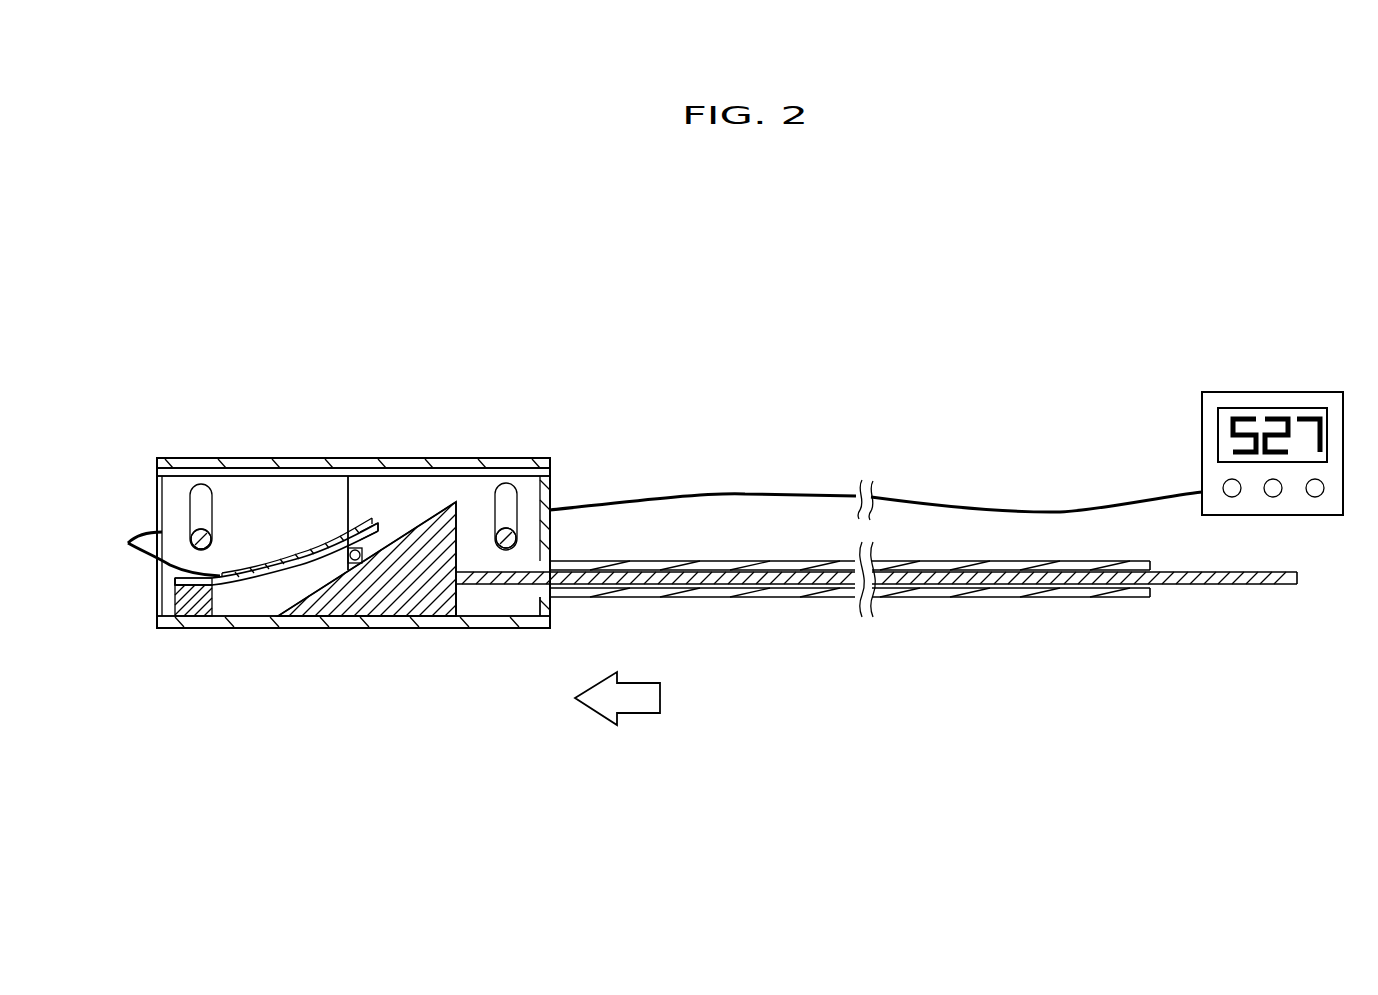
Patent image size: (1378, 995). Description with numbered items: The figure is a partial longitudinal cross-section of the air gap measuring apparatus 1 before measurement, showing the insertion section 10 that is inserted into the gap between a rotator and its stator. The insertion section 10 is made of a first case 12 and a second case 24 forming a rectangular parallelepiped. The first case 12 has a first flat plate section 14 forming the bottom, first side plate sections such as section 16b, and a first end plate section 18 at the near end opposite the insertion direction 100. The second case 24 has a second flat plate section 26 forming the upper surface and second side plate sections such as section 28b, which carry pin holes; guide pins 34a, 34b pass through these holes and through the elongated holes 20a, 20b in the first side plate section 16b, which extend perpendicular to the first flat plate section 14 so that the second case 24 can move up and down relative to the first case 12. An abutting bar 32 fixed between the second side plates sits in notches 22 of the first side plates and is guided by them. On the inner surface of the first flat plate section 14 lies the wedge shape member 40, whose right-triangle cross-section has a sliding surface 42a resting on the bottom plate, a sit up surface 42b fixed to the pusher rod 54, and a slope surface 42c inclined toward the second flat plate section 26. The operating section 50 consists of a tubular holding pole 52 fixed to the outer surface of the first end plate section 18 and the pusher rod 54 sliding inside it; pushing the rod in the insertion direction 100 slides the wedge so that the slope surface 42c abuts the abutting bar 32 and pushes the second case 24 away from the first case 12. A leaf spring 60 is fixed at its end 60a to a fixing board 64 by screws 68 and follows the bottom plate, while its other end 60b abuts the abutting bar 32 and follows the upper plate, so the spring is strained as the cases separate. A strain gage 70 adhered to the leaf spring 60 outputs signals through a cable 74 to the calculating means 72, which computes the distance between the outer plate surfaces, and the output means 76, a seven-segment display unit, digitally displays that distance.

The air gap measuring apparatus 1 is at (736, 289).
The insertion section 10 is at (217, 366).
The first case 12 is at (267, 662).
The first flat plate section 14 is at (467, 622).
The first side plate section 16b is at (508, 605).
The first end plate section 18 is at (547, 606).
The elongated hole 20a is at (197, 484).
The elongated hole 20b is at (520, 522).
The notch 22 is at (357, 500).
The second case 24 is at (263, 441).
The second flat plate section 26 is at (522, 467).
The second side plate section 28b is at (357, 512).
The abutting bar 32 is at (357, 622).
The guide pin 34a is at (194, 531).
The guide pin 34b is at (517, 538).
The wedge shape member 40 is at (410, 605).
The sliding surface 42a is at (323, 620).
The sit up surface 42b is at (470, 535).
The slope surface 42c is at (428, 516).
The operating section 50 is at (876, 654).
The holding pole 52 is at (930, 592).
The pusher rod 54 is at (1005, 582).
The leaf spring 60 is at (244, 595).
The end of leaf spring 60a is at (182, 598).
The other end of leaf spring 60b is at (355, 548).
The fixing board 64 is at (200, 618).
The screw 68 is at (175, 578).
The strain gage 70 is at (282, 570).
The calculating means 72 is at (1278, 461).
The cable 74 is at (128, 543).
The output means 76 is at (1277, 408).
The insertion direction 100 is at (642, 713).